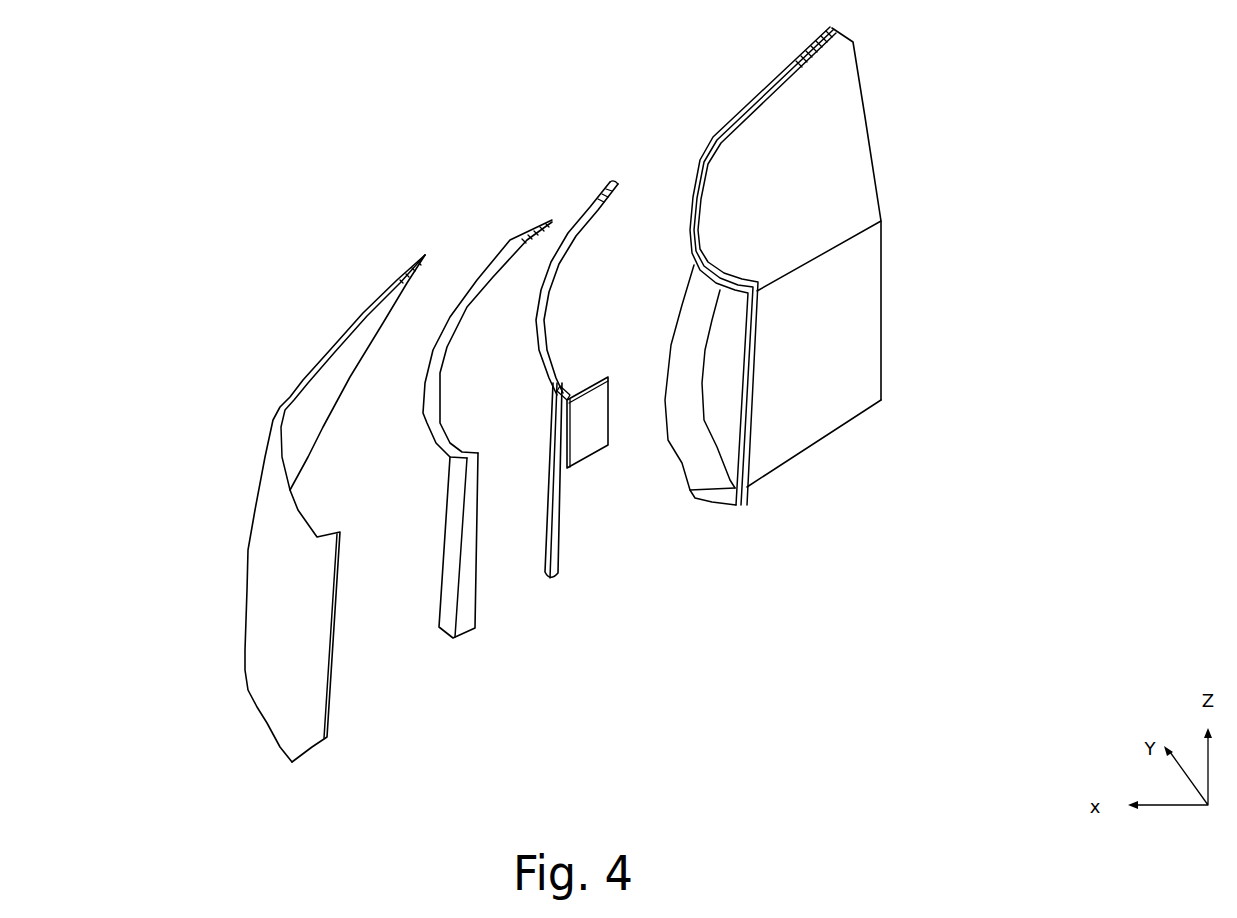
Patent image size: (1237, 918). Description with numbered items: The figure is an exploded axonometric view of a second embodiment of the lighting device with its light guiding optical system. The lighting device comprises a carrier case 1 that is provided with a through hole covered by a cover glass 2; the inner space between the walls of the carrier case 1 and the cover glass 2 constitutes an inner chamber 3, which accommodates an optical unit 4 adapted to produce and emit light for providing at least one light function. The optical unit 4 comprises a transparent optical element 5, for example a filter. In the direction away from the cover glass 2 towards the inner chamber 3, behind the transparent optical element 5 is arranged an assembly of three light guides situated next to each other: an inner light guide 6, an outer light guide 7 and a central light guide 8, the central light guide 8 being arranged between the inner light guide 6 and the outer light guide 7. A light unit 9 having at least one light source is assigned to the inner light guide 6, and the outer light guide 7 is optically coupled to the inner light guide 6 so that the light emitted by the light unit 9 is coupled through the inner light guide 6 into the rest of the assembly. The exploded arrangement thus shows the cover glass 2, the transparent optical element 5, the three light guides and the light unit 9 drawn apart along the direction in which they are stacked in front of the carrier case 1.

The carrier case 1 is at (867, 117).
The cover glass 2 is at (282, 403).
The inner chamber 3 is at (719, 375).
The optical unit 4 is at (580, 504).
The transparent optical element 5 is at (457, 638).
The inner light guide 6 is at (553, 580).
The outer light guide 7 is at (526, 331).
The central light guide 8 is at (516, 567).
The light unit 9 is at (580, 460).